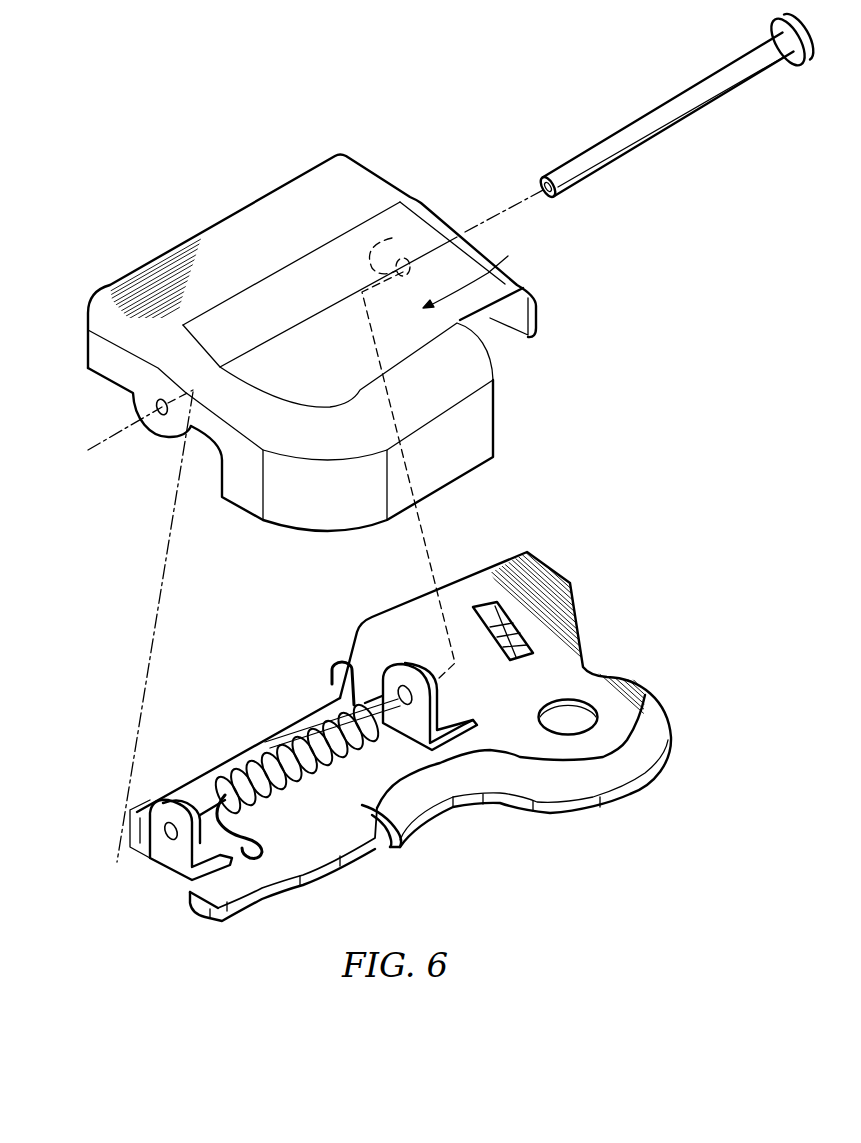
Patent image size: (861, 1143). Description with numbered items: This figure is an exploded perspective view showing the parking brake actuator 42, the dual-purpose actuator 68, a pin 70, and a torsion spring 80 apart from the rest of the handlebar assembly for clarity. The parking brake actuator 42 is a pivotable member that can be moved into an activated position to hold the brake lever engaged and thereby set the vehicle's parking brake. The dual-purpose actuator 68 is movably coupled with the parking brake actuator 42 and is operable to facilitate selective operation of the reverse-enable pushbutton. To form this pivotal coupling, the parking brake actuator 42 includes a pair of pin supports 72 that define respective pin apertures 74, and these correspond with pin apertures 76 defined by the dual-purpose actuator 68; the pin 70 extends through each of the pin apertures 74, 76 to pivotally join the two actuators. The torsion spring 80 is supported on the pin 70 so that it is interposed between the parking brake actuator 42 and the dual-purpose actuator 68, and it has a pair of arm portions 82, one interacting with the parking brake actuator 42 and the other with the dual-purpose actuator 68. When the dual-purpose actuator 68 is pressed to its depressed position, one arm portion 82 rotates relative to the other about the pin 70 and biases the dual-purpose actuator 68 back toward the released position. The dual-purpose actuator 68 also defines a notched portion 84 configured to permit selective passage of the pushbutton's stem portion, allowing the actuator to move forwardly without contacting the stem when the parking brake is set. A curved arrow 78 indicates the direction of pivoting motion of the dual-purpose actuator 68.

The parking brake actuator 42 is at (545, 578).
The dual-purpose actuator 68 is at (262, 213).
The pin 70 is at (665, 102).
The pin supports 72 is at (172, 858).
The pin apertures 74 is at (178, 820).
The pin apertures 76 is at (140, 397).
The rotation direction 78 is at (471, 270).
The torsion spring 80 is at (270, 743).
The arm portions 82 is at (333, 660).
The notched portion 84 is at (510, 354).